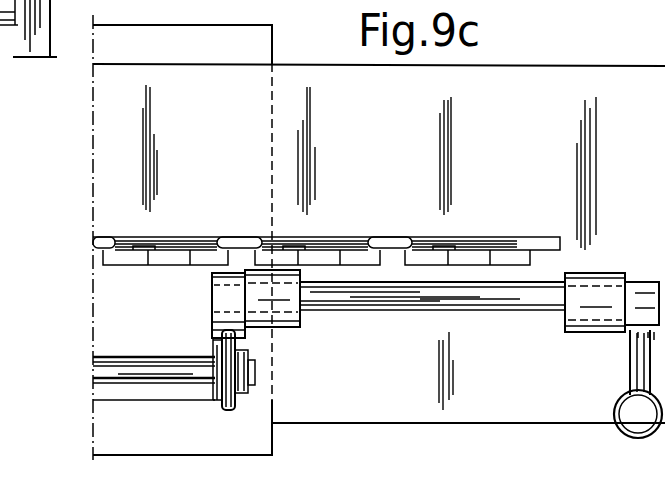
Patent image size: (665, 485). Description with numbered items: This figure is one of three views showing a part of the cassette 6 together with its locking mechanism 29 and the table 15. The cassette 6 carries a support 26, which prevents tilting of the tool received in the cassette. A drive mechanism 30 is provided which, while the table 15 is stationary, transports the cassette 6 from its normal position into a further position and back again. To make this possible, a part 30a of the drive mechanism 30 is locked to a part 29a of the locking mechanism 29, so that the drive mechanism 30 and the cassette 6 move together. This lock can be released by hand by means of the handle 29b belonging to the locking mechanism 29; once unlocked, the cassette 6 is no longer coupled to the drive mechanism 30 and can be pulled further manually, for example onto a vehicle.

The cassette 6 is at (582, 78).
The table 15 is at (153, 52).
The support 26 is at (117, 254).
The locking mechanism 29 is at (480, 304).
The part of the locking mechanism 29a is at (222, 322).
The handle 29b is at (640, 382).
The drive mechanism 30 is at (108, 369).
The part of the drive mechanism 30a is at (250, 387).